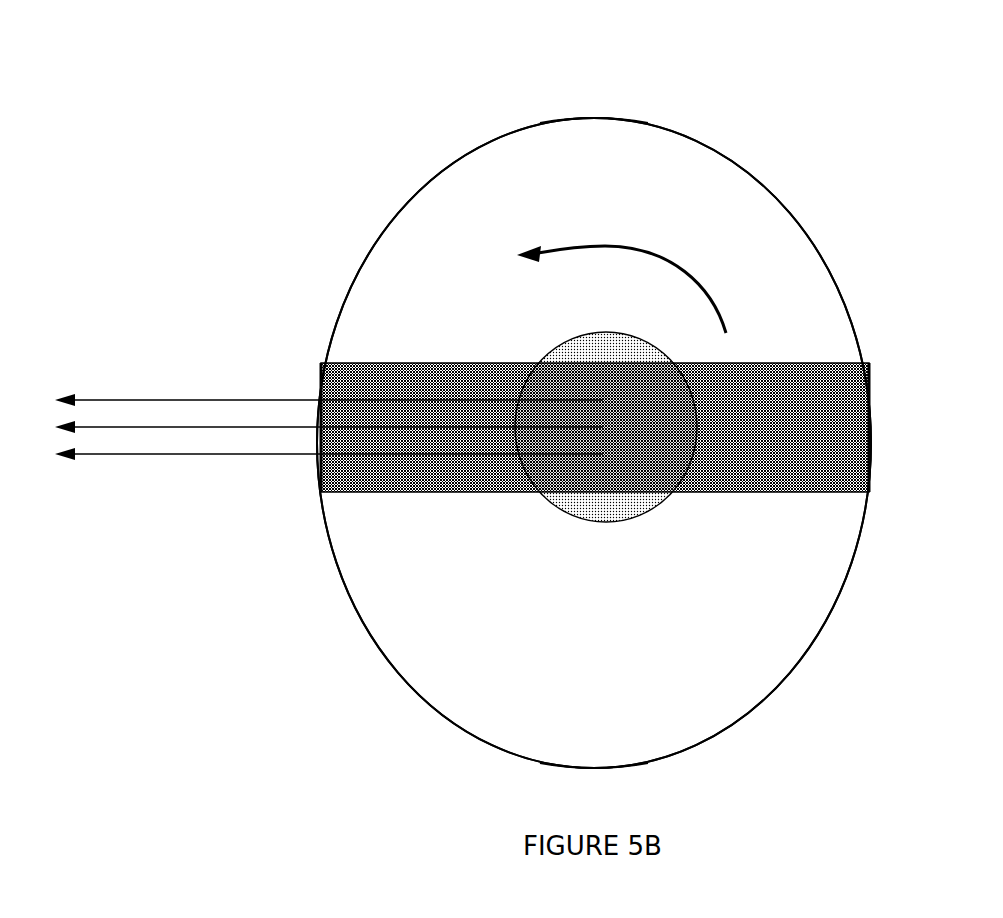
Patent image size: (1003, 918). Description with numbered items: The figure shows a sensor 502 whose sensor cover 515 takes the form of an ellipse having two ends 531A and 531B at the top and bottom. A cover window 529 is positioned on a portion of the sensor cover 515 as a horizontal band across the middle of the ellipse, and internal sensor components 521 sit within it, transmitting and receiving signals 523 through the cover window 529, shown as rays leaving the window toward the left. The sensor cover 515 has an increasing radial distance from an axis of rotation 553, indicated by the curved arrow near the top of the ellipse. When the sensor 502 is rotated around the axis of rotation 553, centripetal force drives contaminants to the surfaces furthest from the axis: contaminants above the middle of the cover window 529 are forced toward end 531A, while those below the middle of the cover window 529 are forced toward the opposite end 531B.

The sensor 502 is at (720, 638).
The sensor cover 515 is at (830, 273).
The internal sensor components 521 is at (563, 340).
The signals 523 is at (192, 458).
The cover window 529 is at (390, 493).
The end of sensor cover 531A is at (585, 118).
The end of sensor cover 531B is at (594, 768).
The axis of rotation 553 is at (650, 250).